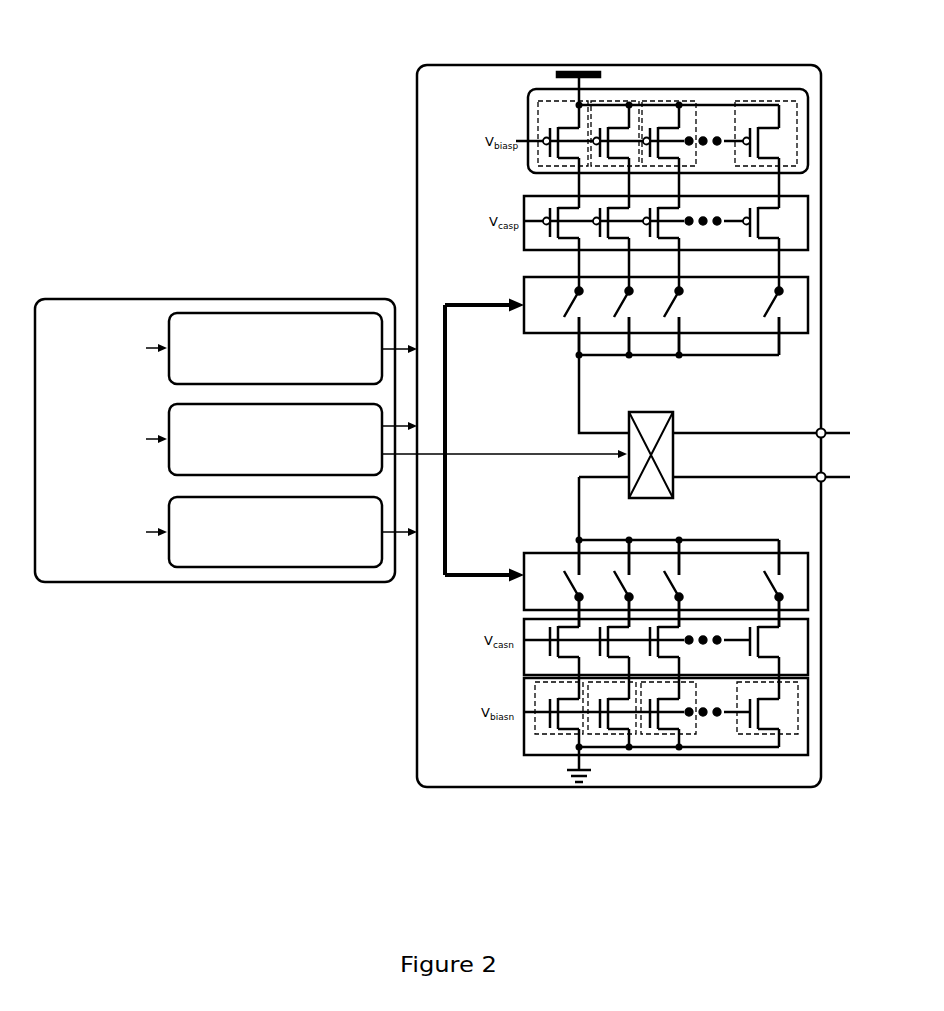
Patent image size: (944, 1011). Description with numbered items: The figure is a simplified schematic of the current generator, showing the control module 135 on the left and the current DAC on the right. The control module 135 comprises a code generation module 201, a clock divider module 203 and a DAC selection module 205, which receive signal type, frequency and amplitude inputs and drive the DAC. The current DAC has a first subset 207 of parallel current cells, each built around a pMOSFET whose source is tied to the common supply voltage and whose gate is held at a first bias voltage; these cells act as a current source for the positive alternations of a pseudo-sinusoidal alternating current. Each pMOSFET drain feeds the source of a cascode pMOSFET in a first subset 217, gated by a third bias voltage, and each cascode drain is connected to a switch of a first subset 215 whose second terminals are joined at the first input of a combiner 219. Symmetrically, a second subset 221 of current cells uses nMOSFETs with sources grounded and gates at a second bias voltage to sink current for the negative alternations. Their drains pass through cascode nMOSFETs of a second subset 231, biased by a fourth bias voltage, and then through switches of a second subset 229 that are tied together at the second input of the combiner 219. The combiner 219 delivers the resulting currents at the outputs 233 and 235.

The control module 135 is at (215, 410).
The code generation module 201 is at (168, 378).
The clock divider module 203 is at (168, 469).
The DAC selection module 205 is at (168, 561).
The first subset 207 is at (660, 107).
The first subset 217 is at (659, 233).
The first subset 215 is at (660, 315).
The combiner 219 is at (645, 412).
The first output terminal I1 233 is at (824, 437).
The second output terminal I2 235 is at (824, 481).
The second subset 229 is at (663, 583).
The second subset 231 is at (652, 655).
The second subset 221 is at (663, 755).